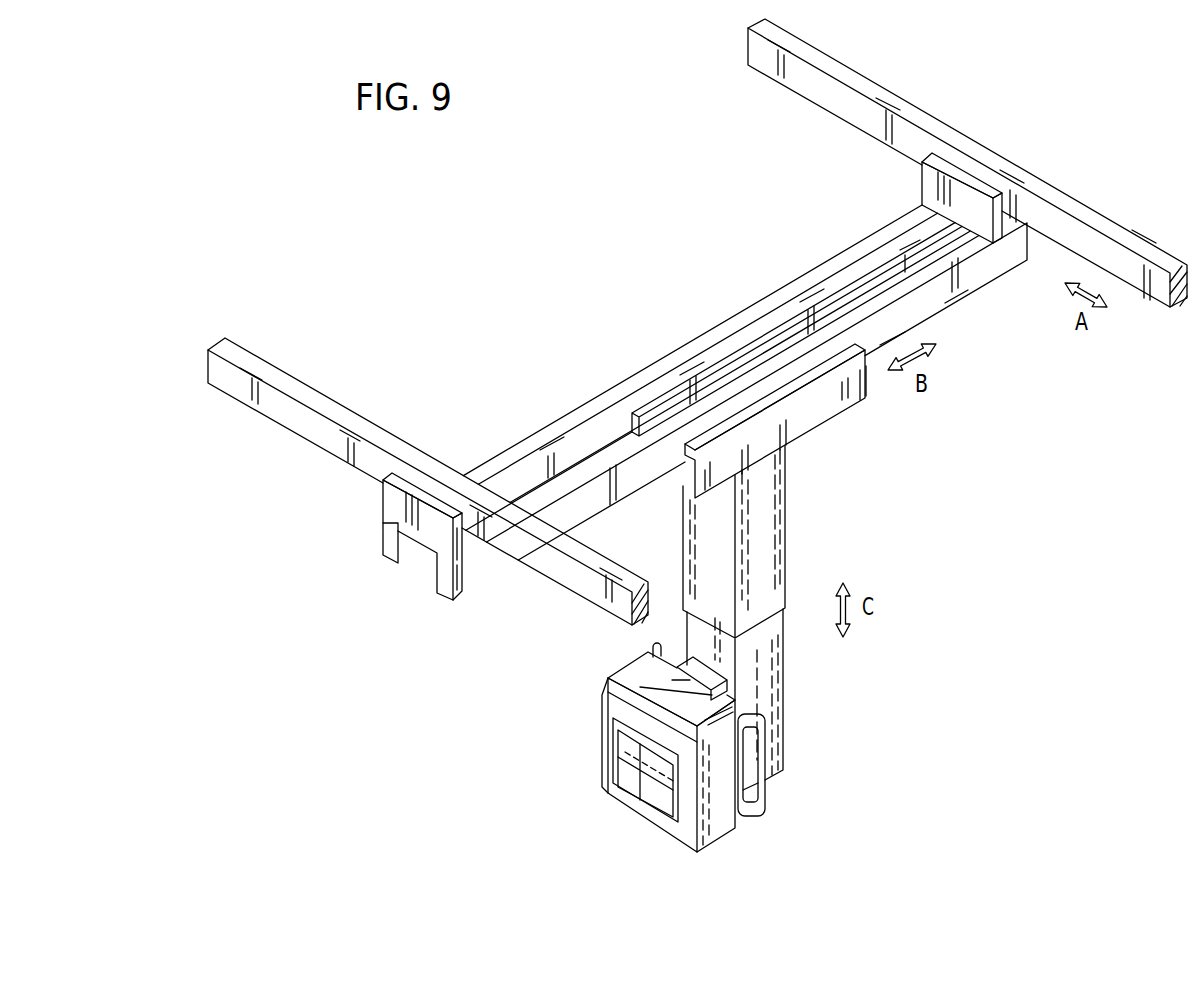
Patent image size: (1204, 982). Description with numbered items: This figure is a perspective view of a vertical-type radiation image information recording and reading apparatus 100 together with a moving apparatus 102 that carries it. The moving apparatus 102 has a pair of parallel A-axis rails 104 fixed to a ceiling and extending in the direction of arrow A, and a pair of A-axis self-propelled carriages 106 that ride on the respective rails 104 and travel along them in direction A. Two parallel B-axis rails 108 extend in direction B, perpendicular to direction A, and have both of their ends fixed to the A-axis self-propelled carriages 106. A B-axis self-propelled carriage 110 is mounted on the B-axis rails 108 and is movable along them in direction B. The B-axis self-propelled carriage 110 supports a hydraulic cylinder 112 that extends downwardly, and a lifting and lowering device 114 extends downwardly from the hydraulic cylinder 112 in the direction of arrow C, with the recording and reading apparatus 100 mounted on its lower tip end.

The radiation image information recording and reading apparatus 100 is at (596, 709).
The moving apparatus 102 is at (697, 322).
The A-axis rails 104 is at (1113, 229).
The A-axis self-propelled carriages 106 is at (935, 187).
The B-axis rails 108 is at (633, 385).
The B-axis self-propelled carriage 110 is at (812, 415).
The hydraulic cylinder 112 is at (770, 548).
The lifting and lowering device 114 is at (758, 686).